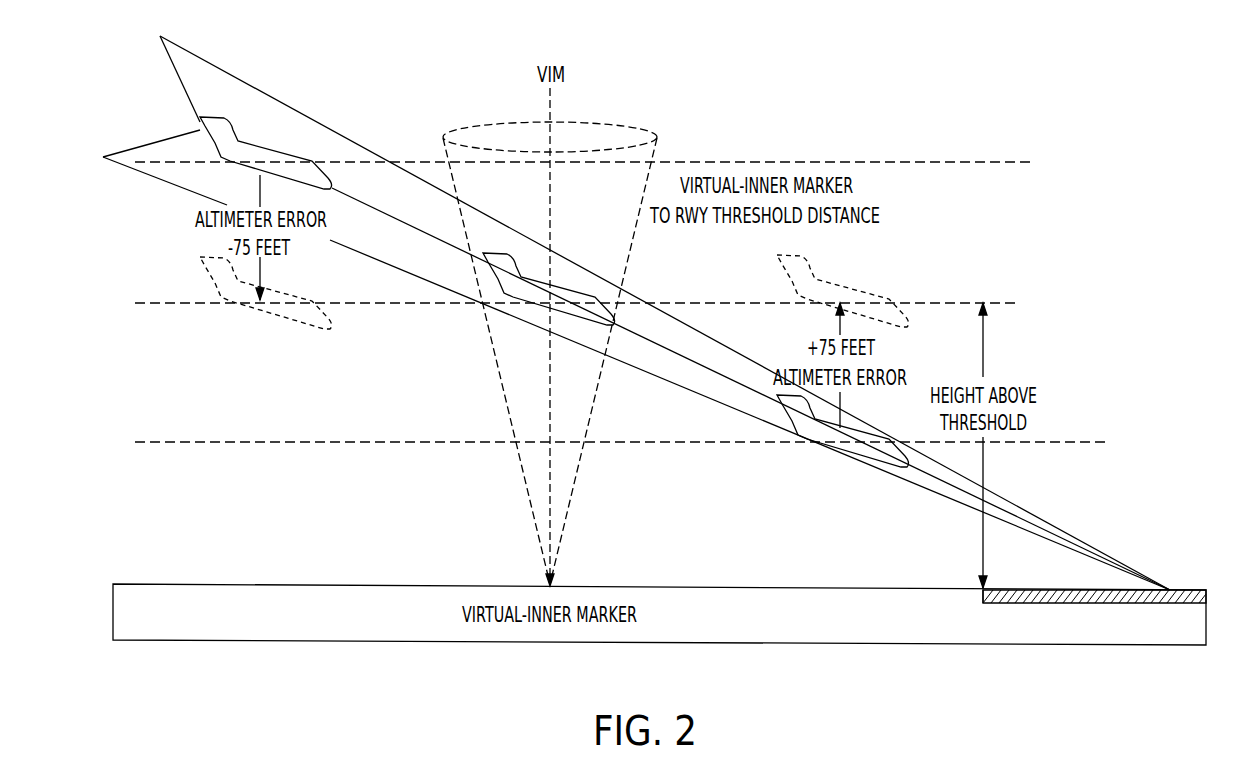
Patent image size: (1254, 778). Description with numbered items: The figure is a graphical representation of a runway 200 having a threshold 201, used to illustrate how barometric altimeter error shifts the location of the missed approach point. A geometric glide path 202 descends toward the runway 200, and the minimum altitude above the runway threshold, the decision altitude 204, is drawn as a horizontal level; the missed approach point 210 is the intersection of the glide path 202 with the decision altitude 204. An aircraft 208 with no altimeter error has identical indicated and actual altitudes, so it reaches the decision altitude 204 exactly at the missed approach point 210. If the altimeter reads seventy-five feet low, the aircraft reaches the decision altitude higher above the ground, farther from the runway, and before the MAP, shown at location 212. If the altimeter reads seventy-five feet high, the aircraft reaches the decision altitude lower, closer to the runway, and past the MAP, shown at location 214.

The runway 200 is at (1190, 590).
The threshold 201 is at (980, 590).
The geometric glide path 202 is at (675, 355).
The minimum altitude above the runway threshold (DA(H)) 204 is at (950, 302).
The aircraft 208 is at (573, 293).
The missed approach point (MAP) 210 is at (518, 297).
The location of aircraft with minus 75 feet altimeter error 212 is at (278, 162).
The location of aircraft with plus 75 feet altimeter error 214 is at (843, 445).